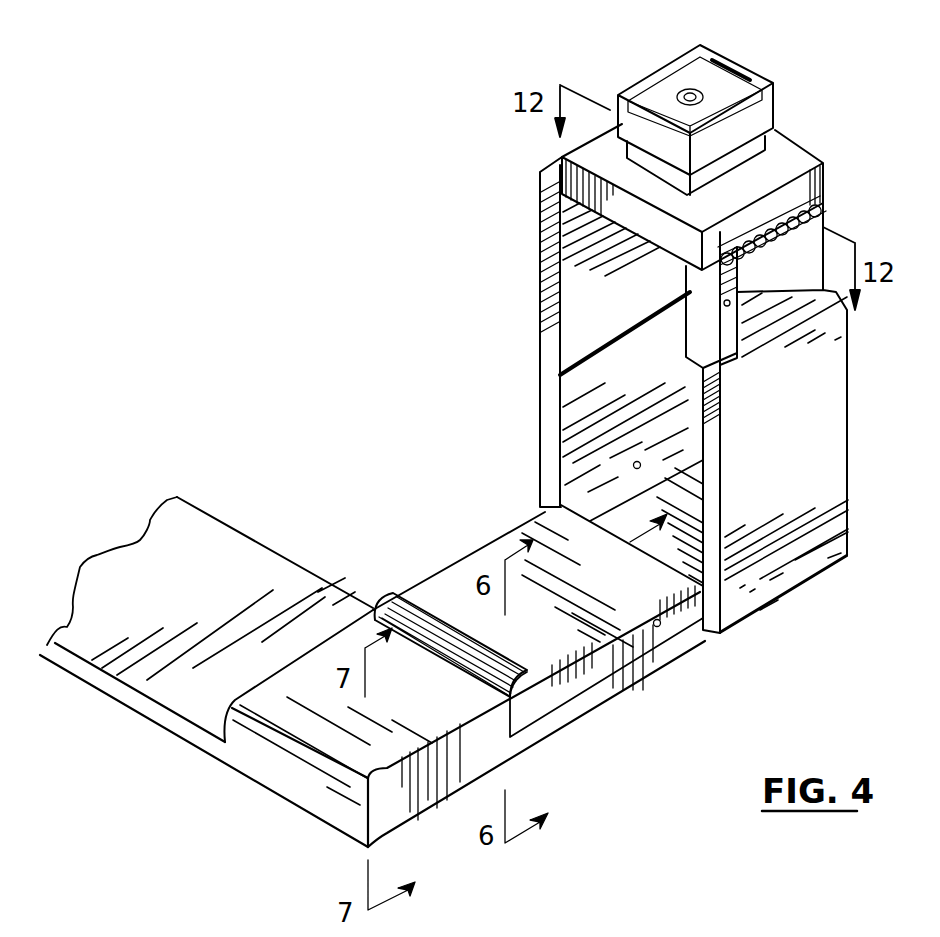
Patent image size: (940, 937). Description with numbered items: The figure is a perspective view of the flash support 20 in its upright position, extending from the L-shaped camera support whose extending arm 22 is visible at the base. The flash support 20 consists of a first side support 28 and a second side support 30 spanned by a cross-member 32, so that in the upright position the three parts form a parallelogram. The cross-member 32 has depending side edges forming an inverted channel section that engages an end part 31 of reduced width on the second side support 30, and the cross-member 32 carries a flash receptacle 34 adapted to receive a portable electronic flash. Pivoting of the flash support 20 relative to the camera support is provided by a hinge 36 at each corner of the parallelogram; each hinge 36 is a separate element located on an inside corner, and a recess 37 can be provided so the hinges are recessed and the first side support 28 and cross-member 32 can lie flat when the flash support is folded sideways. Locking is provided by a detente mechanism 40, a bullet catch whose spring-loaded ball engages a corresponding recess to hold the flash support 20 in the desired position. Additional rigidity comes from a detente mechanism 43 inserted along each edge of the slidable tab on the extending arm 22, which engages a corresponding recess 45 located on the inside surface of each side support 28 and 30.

The flash support 20 is at (862, 430).
The extending arm 22 is at (628, 690).
The first side support 28 is at (538, 200).
The second side support 30 is at (849, 375).
The end part 31 is at (823, 250).
The cross-member 32 is at (813, 150).
The flash receptacle 34 is at (748, 82).
The hinge 36 is at (823, 186).
The recess 37 is at (548, 368).
The detente mechanism 40 is at (724, 306).
The detente mechanism 43 is at (660, 625).
The recess 45 is at (632, 466).